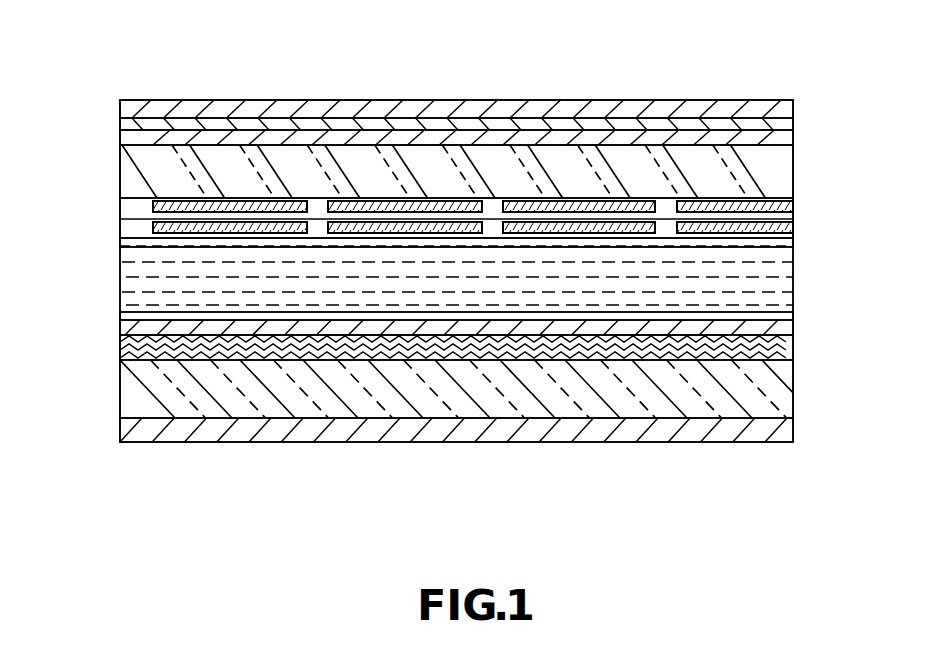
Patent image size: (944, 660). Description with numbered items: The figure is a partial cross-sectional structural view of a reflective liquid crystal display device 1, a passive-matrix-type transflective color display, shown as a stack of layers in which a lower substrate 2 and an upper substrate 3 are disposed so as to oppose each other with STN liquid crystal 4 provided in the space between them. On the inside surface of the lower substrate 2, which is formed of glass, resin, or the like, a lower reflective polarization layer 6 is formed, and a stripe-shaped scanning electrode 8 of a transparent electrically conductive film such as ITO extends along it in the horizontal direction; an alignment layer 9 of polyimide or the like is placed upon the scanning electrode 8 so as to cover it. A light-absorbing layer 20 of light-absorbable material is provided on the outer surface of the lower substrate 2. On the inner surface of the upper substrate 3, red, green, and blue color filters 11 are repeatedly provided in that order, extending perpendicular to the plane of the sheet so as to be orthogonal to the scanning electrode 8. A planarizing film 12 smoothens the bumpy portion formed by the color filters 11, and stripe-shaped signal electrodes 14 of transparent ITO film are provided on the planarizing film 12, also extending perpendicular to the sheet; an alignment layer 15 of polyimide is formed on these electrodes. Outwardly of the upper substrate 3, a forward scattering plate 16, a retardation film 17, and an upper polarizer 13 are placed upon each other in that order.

The liquid crystal display device 1 is at (775, 86).
The lower substrate 2 is at (783, 388).
The upper substrate 3 is at (783, 176).
The STN liquid crystal 4 is at (783, 278).
The lower reflective polarization layer 6 is at (120, 350).
The scanning electrode 8 is at (783, 326).
The alignment layer 9 is at (783, 316).
The color filters 11 is at (253, 206).
The planarizing film 12 is at (504, 134).
The upper polarizer 13 is at (783, 110).
The signal electrodes 14 is at (192, 227).
The alignment layer 15 is at (783, 236).
The forward scattering plate 16 is at (783, 140).
The retardation film 17 is at (783, 124).
The light-absorbing layer 20 is at (783, 432).